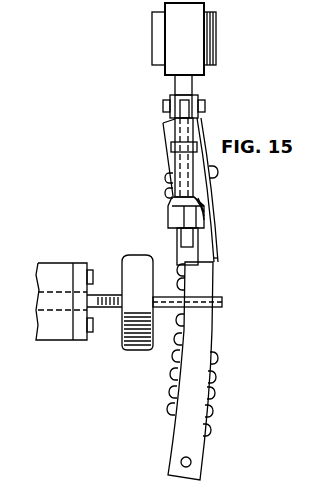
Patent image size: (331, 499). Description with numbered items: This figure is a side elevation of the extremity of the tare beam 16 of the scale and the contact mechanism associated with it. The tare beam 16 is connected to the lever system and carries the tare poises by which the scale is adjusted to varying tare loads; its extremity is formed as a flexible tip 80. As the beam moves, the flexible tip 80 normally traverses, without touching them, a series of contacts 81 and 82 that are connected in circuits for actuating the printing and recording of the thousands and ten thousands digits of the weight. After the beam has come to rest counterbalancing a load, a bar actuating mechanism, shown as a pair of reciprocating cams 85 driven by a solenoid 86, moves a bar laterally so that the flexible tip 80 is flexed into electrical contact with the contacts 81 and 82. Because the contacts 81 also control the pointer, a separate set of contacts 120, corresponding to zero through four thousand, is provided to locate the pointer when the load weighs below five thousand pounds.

The tare beam 16 is at (62, 325).
The flexible tip 80 is at (210, 300).
The contacts 81 is at (180, 355).
The contacts 82 is at (214, 218).
The reciprocating cams 85 is at (171, 213).
The solenoid 86 is at (192, 41).
The contacts 120 is at (218, 410).